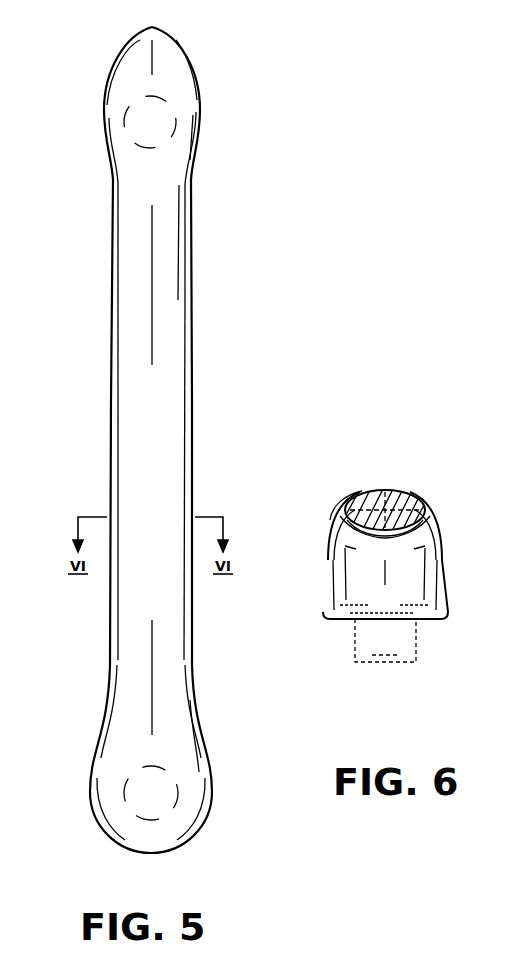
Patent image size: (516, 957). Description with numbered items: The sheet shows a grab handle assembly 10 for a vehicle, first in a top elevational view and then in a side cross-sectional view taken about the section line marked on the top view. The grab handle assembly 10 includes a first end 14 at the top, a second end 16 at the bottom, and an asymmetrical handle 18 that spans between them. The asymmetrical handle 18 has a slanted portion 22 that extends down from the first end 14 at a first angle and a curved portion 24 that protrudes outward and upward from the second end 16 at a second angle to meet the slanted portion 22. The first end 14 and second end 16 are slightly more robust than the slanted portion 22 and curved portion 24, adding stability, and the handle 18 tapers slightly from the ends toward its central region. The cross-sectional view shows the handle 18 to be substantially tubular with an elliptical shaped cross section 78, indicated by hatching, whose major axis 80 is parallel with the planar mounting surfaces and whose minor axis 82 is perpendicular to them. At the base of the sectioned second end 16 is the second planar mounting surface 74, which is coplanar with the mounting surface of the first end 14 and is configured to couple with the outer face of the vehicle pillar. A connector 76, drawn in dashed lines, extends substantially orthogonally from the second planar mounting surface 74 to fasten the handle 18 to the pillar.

In FIG. 5, the grab handle assembly 10 is at (88, 196).
In FIG. 5, the first end 14 is at (163, 72).
In FIG. 5, the slanted portion 22 is at (156, 188).
In FIG. 5, the asymmetrical handle 18 is at (160, 407).
In FIG. 6, the asymmetrical handle 18 is at (362, 490).
In FIG. 5, the curved portion 24 is at (130, 738).
In FIG. 5, the second end 16 is at (182, 825).
In FIG. 6, the second end 16 is at (363, 593).
In FIG. 6, the second planar mounting surface 74 is at (427, 622).
In FIG. 6, the connector 76 is at (385, 652).
In FIG. 6, the elliptical shaped cross section 78 is at (408, 492).
In FIG. 6, the major axis 80 is at (423, 498).
In FIG. 6, the minor axis 82 is at (390, 492).